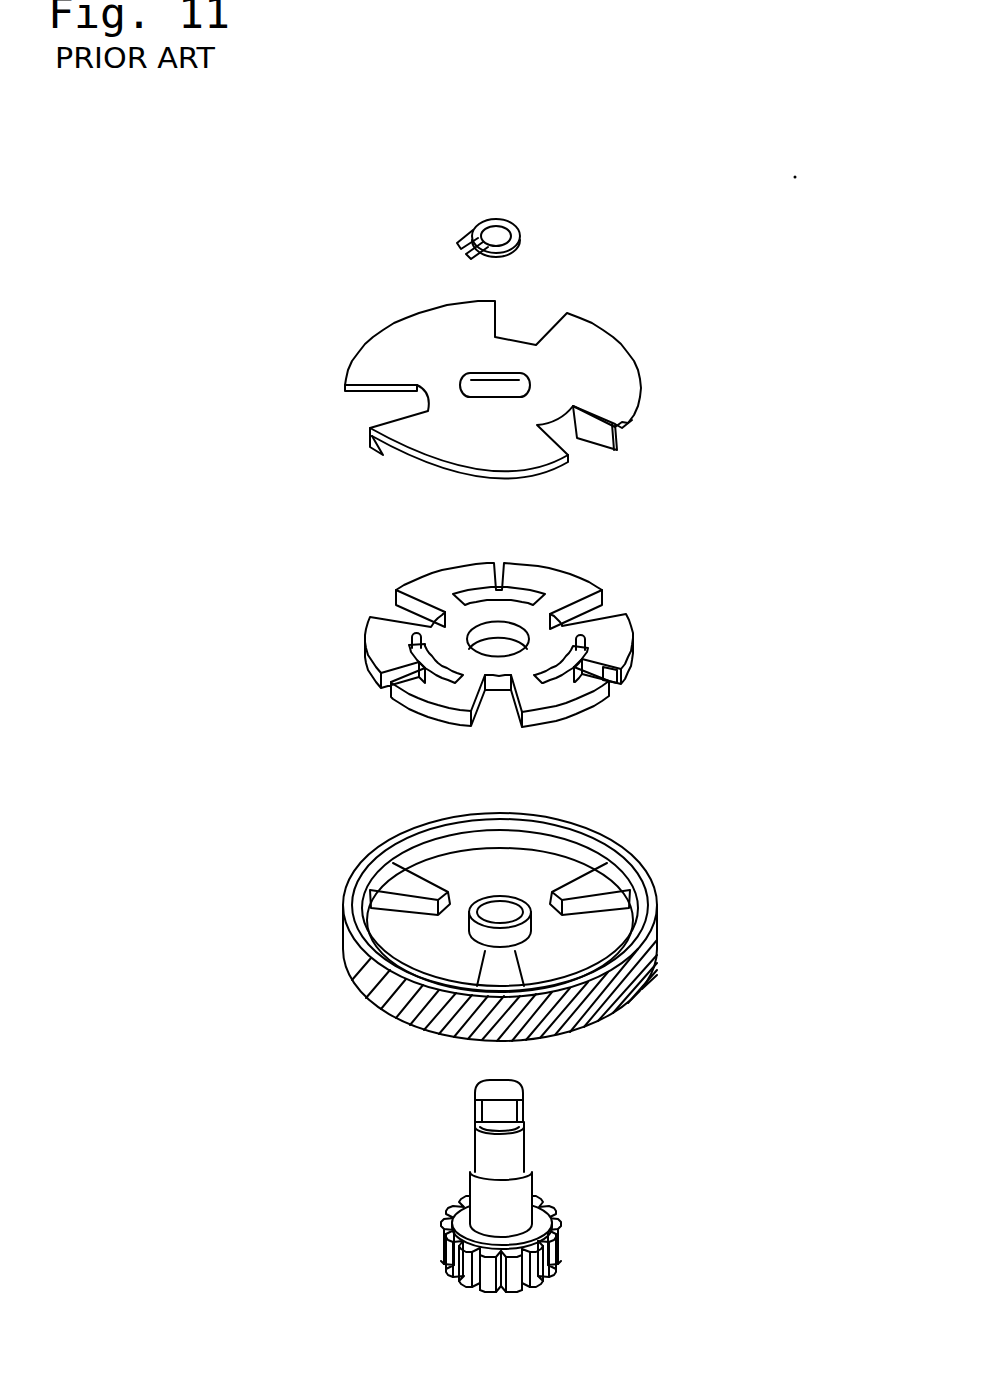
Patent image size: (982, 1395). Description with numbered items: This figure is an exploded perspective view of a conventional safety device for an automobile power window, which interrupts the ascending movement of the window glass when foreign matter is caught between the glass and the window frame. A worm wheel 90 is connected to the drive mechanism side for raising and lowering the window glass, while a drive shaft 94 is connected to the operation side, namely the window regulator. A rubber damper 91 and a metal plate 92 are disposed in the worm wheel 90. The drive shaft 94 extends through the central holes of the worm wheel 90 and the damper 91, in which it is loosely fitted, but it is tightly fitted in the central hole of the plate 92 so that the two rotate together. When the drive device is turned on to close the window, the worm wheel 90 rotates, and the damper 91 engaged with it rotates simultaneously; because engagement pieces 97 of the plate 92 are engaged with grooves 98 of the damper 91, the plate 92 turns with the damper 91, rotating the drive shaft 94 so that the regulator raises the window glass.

The worm wheel 90 is at (660, 908).
The rubber damper 91 is at (545, 628).
The metal plate 92 is at (600, 360).
The drive shaft 94 is at (530, 1182).
The engagement pieces 97 is at (595, 433).
The grooves 98 is at (628, 667).